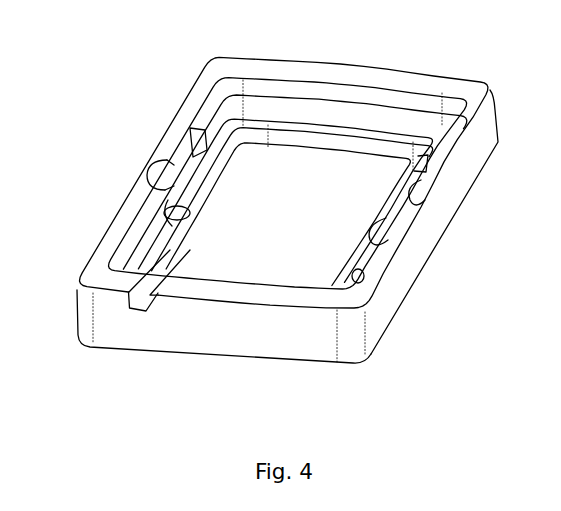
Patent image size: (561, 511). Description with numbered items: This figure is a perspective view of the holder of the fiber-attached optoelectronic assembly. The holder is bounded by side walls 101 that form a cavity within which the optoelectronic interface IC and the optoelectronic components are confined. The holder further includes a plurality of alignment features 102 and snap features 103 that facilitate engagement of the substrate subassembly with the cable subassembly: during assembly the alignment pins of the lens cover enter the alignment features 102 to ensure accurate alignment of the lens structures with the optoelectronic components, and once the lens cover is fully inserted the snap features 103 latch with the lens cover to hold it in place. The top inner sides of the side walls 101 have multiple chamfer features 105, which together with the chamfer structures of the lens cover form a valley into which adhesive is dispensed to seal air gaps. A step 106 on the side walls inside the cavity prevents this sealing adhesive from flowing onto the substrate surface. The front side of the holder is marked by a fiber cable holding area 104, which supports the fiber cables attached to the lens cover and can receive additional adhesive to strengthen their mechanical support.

The side walls 101 is at (260, 70).
The alignment features 102 is at (207, 223).
The snap features 103 is at (412, 165).
The fiber cable holding area 104 is at (213, 313).
The chamfer features 105 is at (138, 232).
The step 106 is at (160, 250).